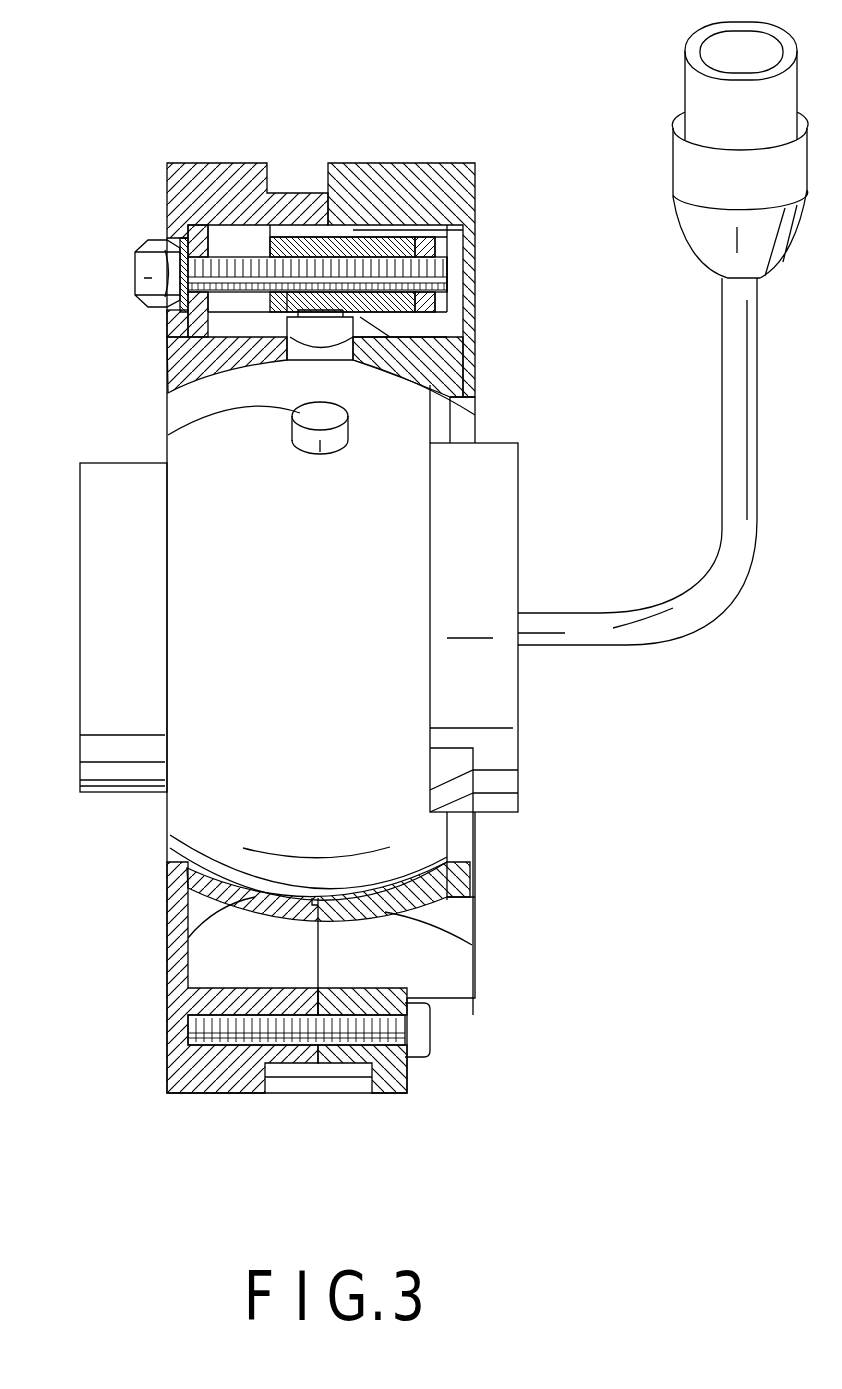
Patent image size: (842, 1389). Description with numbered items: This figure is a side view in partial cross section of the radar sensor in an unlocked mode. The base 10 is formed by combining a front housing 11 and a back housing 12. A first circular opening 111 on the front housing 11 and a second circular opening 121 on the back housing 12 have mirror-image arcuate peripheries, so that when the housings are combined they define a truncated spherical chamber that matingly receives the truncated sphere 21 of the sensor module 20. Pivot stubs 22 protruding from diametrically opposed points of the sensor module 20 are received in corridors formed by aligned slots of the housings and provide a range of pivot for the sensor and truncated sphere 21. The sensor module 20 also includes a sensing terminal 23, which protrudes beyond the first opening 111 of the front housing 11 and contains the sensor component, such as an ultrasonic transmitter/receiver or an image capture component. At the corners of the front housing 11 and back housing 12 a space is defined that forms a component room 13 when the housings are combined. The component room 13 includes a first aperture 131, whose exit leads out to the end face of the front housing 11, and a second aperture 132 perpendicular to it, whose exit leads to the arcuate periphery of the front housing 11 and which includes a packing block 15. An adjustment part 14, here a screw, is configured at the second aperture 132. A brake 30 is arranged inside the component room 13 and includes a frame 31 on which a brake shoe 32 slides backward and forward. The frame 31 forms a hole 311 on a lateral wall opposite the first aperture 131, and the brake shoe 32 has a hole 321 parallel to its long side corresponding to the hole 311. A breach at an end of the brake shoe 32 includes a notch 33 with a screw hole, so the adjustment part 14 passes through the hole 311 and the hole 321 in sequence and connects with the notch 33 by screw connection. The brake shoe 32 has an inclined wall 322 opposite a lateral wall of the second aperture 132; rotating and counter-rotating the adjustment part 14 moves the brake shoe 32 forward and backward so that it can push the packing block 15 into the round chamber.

The base 10 is at (307, 576).
The front housing 11 is at (195, 166).
The back housing 12 is at (440, 166).
The component room 13 is at (242, 232).
The adjustment part 14 is at (262, 262).
The packing block 15 is at (273, 354).
The sensor module 20 is at (550, 441).
The truncated sphere 21 is at (410, 833).
The pivot stubs 22 is at (297, 418).
The sensing terminal 23 is at (95, 618).
The brake 30 is at (303, 253).
The frame 31 is at (248, 269).
The brake shoe 32 is at (333, 237).
The notch 33 is at (410, 313).
The first circular opening 111 is at (240, 905).
The second circular opening 121 is at (455, 915).
The first aperture 131 is at (140, 286).
The second aperture 132 is at (440, 411).
The hole 311 is at (160, 312).
The hole 321 is at (390, 351).
The inclined wall 322 is at (395, 366).